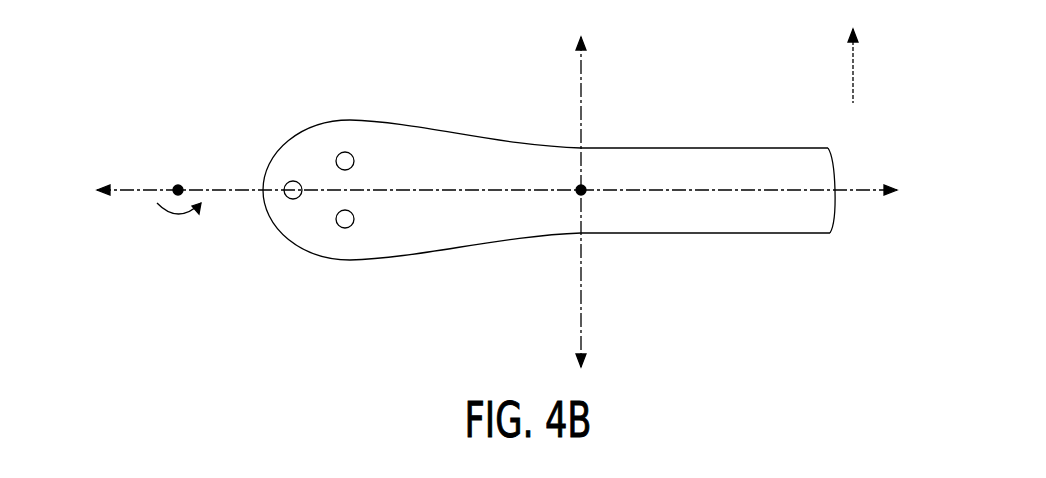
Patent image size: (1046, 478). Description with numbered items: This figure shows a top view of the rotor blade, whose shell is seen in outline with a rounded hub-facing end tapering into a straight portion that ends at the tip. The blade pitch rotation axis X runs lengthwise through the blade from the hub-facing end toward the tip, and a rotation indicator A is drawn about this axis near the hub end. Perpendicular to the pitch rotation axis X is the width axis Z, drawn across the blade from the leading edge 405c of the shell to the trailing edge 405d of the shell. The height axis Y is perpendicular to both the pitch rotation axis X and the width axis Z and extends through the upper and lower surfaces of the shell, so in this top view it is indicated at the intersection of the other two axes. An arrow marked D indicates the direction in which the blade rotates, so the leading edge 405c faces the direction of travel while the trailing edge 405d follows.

The leading edge 405c is at (704, 146).
The trailing edge 405d is at (695, 235).
The rotation direction A is at (177, 186).
The rotation direction D is at (854, 75).
The blade pitch rotation axis X is at (850, 186).
The height axis Y is at (583, 194).
The width axis Z is at (578, 105).